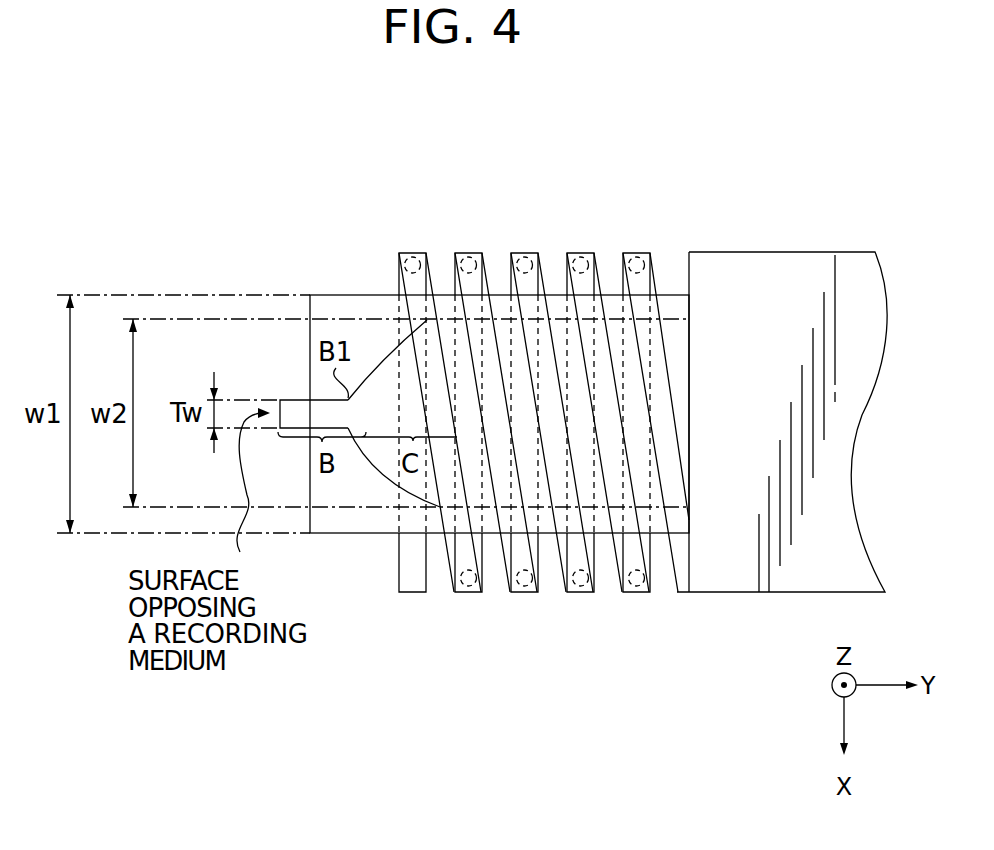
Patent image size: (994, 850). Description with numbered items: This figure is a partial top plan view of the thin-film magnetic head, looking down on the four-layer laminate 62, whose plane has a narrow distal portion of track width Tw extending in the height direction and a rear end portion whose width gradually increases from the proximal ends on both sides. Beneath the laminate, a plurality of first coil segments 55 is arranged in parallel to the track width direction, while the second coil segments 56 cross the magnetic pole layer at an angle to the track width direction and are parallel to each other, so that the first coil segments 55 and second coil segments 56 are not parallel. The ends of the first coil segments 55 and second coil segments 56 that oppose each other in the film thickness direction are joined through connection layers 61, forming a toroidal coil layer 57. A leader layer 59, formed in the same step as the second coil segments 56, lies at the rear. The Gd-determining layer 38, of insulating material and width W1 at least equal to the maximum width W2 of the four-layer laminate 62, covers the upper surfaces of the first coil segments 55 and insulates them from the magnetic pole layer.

The Gd-determining layer 38 is at (355, 293).
The first coil segments 55 is at (660, 618).
The second coil segments 56 is at (659, 260).
The toroidal coil layer 57 is at (676, 238).
The leader layer 59 is at (838, 443).
The connection layers 61 is at (632, 652).
The four-layer laminate 62 is at (376, 455).